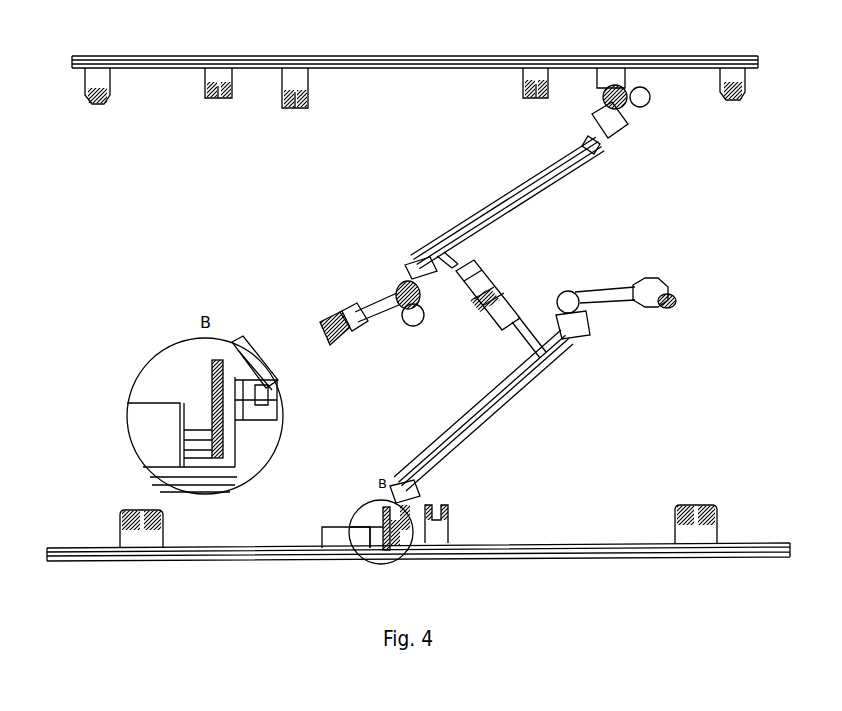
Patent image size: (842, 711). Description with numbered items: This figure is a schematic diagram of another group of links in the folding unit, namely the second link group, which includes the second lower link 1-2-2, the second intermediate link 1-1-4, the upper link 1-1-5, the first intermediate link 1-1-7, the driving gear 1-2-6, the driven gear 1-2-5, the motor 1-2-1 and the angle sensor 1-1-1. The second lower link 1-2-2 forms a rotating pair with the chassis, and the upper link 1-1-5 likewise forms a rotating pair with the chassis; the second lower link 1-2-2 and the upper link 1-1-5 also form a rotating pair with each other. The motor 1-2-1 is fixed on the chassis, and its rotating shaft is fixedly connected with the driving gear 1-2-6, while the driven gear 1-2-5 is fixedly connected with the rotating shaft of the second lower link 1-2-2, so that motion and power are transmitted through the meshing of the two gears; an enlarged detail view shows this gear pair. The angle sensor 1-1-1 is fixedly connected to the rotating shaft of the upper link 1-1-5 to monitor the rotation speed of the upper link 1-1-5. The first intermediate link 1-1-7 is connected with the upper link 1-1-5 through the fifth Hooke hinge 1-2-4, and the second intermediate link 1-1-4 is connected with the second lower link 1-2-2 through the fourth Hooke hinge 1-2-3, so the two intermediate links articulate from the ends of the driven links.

The angle sensor 1-1-1 is at (643, 90).
The intermediate link 2 1-1-4 is at (608, 300).
The upper link 1-1-5 is at (566, 150).
The intermediate link 1 1-1-7 is at (380, 300).
The motor 1-2-1 is at (340, 537).
The lower link 2 1-2-2 is at (420, 490).
The Hooke hinge 4 1-2-3 is at (567, 315).
The Hooke hinge 5 1-2-4 is at (436, 257).
The driven gear 1-2-5 is at (212, 380).
The driving gear 1-2-6 is at (207, 430).